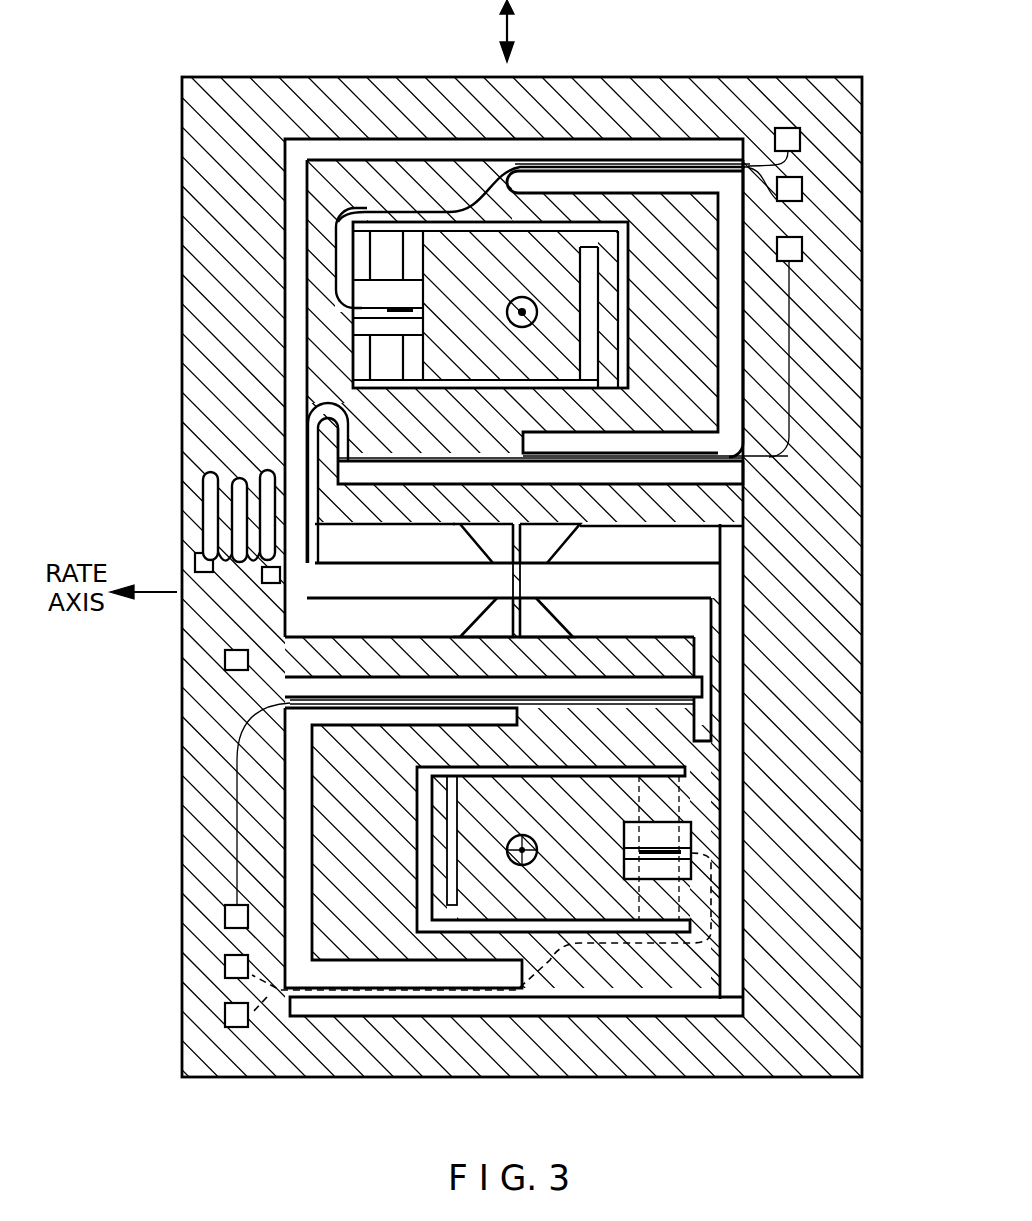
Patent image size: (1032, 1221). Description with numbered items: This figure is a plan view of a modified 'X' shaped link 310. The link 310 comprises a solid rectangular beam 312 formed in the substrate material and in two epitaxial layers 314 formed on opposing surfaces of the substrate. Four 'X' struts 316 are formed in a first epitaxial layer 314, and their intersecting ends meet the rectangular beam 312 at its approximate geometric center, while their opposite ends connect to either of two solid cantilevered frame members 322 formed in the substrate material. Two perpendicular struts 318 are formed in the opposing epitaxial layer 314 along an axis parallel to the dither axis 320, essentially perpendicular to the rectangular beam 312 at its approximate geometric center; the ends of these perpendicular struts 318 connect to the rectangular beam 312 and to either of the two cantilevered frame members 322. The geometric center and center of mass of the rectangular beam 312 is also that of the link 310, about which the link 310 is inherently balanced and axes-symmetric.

The link 310 is at (695, 580).
The rectangular beam 312 is at (683, 557).
The epitaxial layer 314 is at (828, 1017).
The 'X' struts 316 is at (580, 620).
The perpendicular struts 318 is at (483, 613).
The dither axis 320 is at (507, 32).
The cantilevered frame members 322 is at (365, 530).